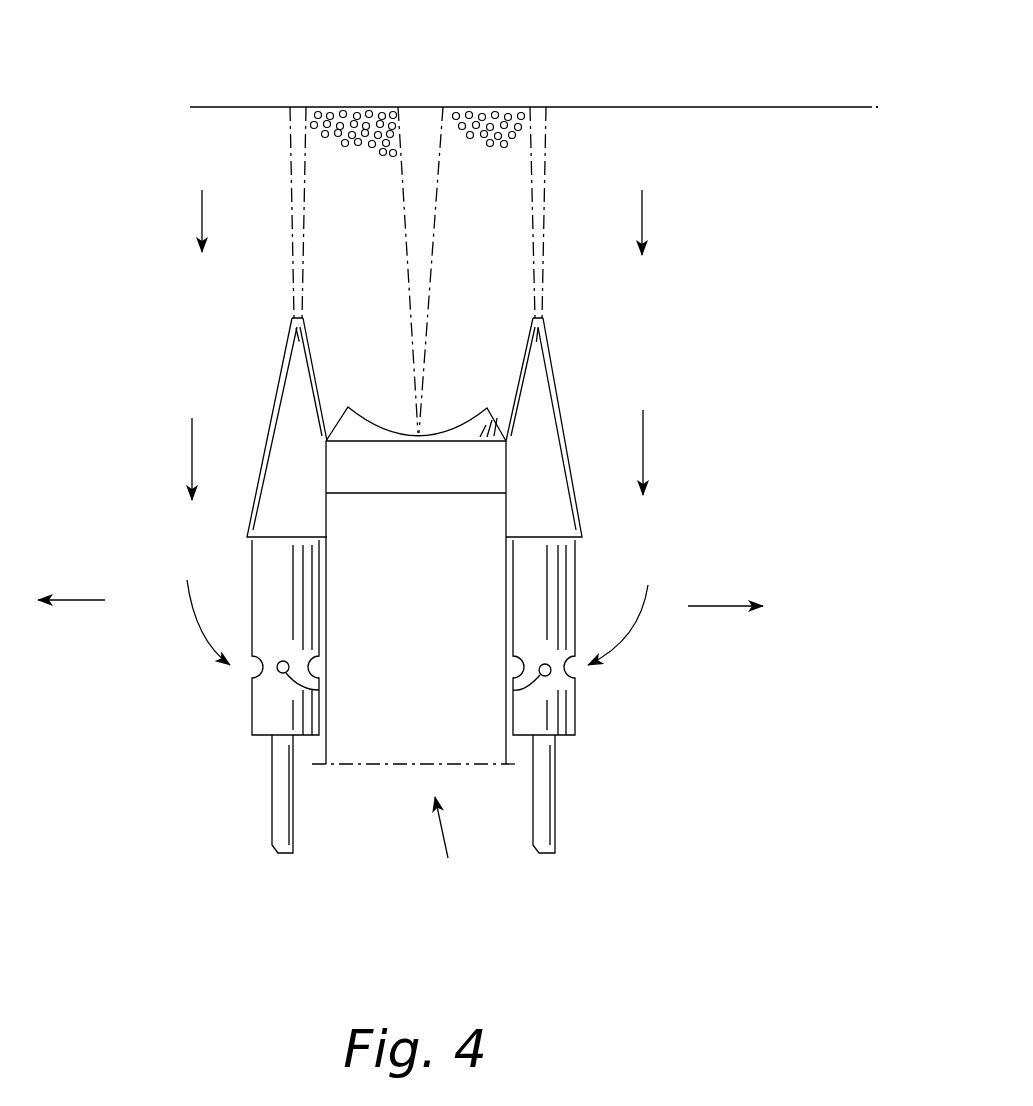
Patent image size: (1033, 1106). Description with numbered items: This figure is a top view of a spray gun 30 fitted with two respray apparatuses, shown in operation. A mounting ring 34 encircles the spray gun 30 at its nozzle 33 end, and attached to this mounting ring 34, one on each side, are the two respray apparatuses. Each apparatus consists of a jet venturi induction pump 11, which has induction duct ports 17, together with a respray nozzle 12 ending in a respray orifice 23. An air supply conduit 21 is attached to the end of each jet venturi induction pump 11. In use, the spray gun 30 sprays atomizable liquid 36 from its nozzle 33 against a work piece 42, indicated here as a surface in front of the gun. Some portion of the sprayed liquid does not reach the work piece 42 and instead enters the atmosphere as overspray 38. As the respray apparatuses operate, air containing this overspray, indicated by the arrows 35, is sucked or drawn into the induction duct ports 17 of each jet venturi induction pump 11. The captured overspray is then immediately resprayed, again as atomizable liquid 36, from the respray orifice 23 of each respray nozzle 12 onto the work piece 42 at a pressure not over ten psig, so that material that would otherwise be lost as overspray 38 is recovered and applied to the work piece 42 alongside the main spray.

The jet venturi induction pump 11 is at (252, 582).
The respray nozzle 12 is at (272, 420).
The induction duct ports 17 is at (305, 690).
The air supply conduit 21 is at (272, 792).
The respray orifice 23 is at (296, 316).
The spray gun 30 is at (447, 844).
The nozzle 33 is at (427, 433).
The mounting ring 34 is at (432, 488).
The arrows 35 is at (400, 411).
The atomizable liquid 36 is at (290, 146).
The overspray 38 is at (363, 115).
The work piece 42 is at (782, 108).